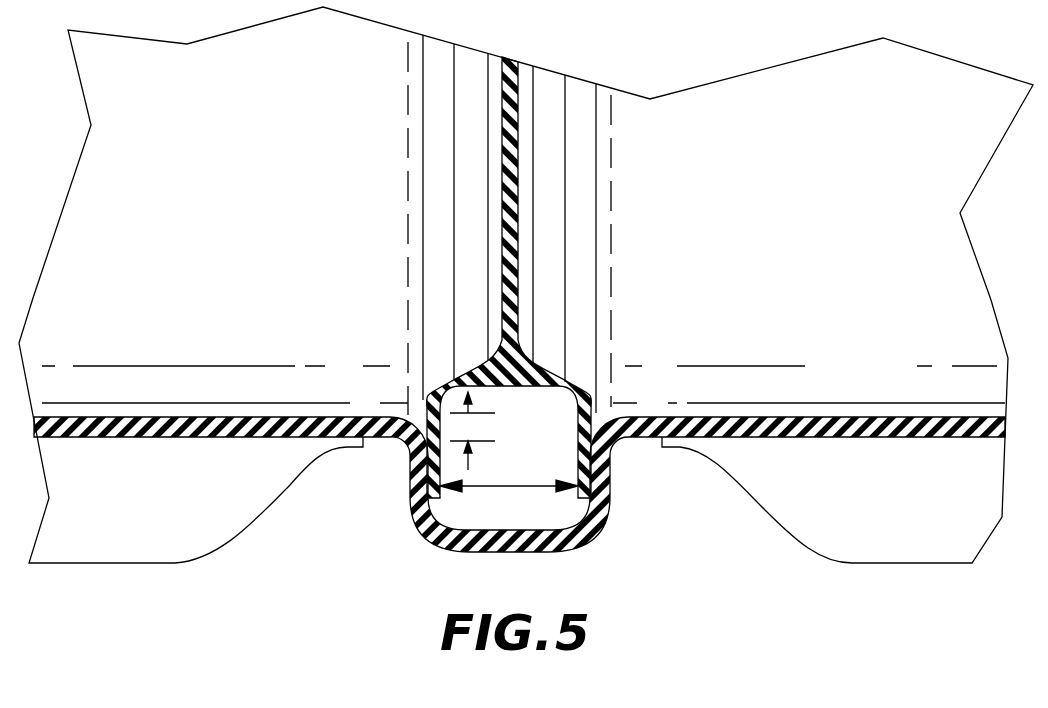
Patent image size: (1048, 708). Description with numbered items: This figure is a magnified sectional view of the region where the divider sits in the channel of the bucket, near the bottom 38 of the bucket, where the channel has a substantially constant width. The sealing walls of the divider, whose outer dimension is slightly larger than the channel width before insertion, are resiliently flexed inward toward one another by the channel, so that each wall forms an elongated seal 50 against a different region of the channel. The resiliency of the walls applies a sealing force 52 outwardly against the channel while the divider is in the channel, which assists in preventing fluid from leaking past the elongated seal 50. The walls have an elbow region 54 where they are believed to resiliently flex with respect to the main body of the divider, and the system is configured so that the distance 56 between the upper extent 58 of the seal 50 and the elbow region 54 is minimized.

The bottom of the bucket 38 is at (378, 417).
The elongated seal 50 is at (410, 450).
The sealing force 52 is at (510, 485).
The elbow region 54 is at (422, 384).
The distance 56 is at (467, 431).
The upper extent of seal 58 is at (492, 440).